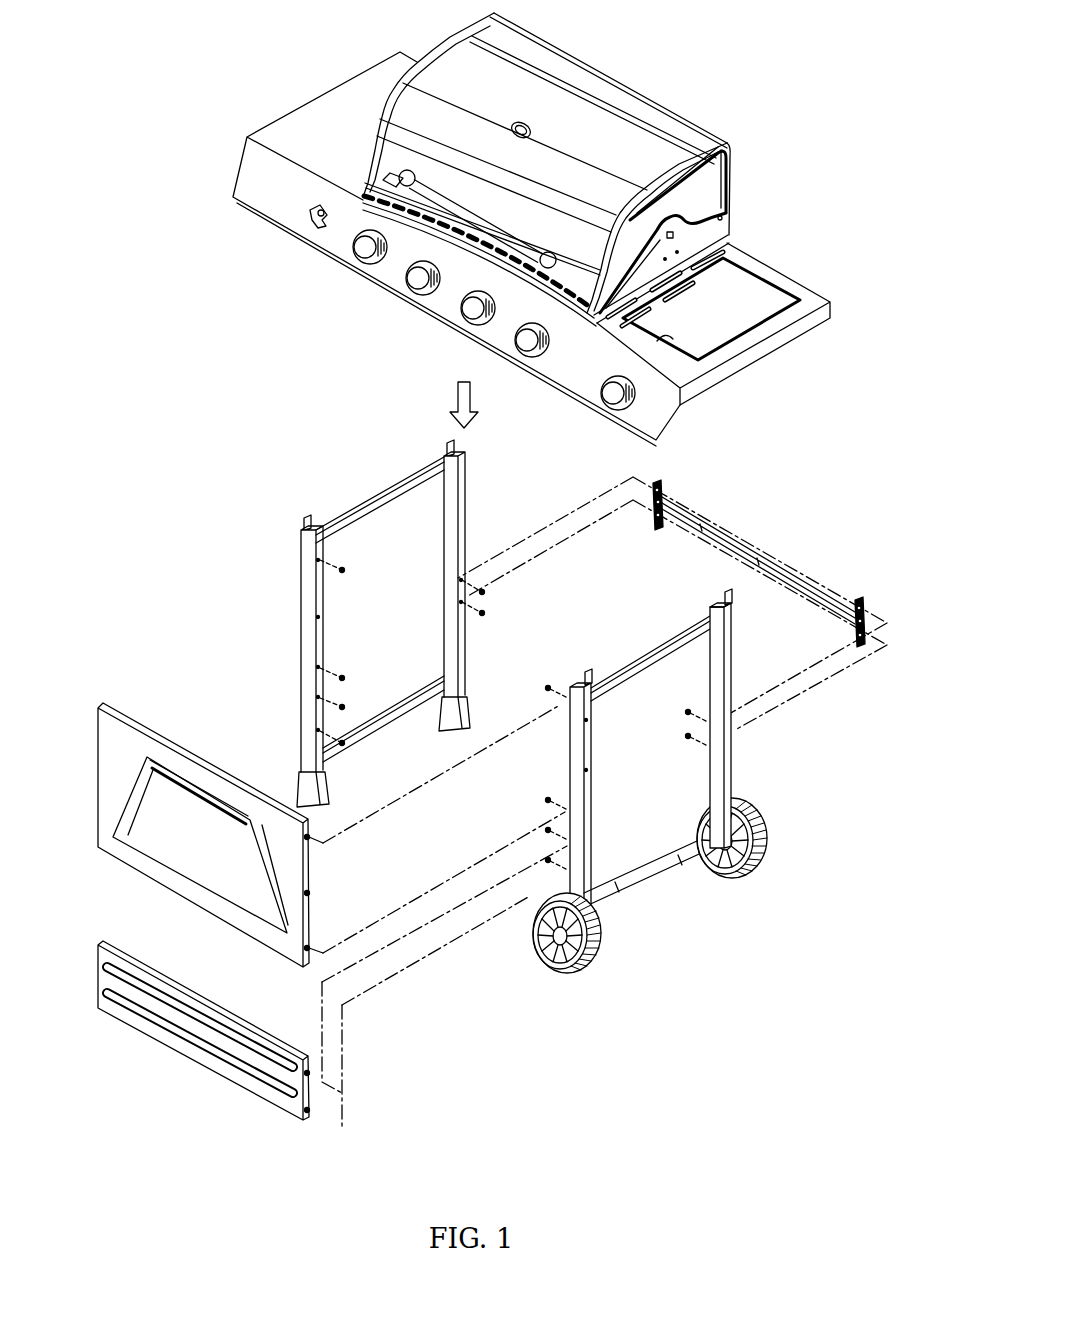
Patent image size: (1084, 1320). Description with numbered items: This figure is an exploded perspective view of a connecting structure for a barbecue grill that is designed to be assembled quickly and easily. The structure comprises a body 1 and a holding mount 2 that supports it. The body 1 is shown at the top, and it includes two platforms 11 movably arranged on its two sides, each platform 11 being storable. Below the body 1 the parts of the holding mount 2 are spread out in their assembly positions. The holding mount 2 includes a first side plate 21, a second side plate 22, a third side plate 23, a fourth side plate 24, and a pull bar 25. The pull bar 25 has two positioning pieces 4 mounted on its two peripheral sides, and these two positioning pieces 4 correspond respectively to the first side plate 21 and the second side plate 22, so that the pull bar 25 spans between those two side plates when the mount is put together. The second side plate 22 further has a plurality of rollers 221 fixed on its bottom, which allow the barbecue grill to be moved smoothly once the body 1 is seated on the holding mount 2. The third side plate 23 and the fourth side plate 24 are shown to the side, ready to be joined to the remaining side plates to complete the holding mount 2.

The body 1 is at (552, 229).
The platform 11 is at (776, 258).
The holding mount 2 is at (492, 785).
The first side plate 21 is at (385, 497).
The second side plate 22 is at (710, 807).
The roller 221 is at (770, 848).
The third side plate 23 is at (125, 713).
The fourth side plate 24 is at (163, 1044).
The pull bar 25 is at (730, 540).
The positioning piece 4 is at (860, 606).